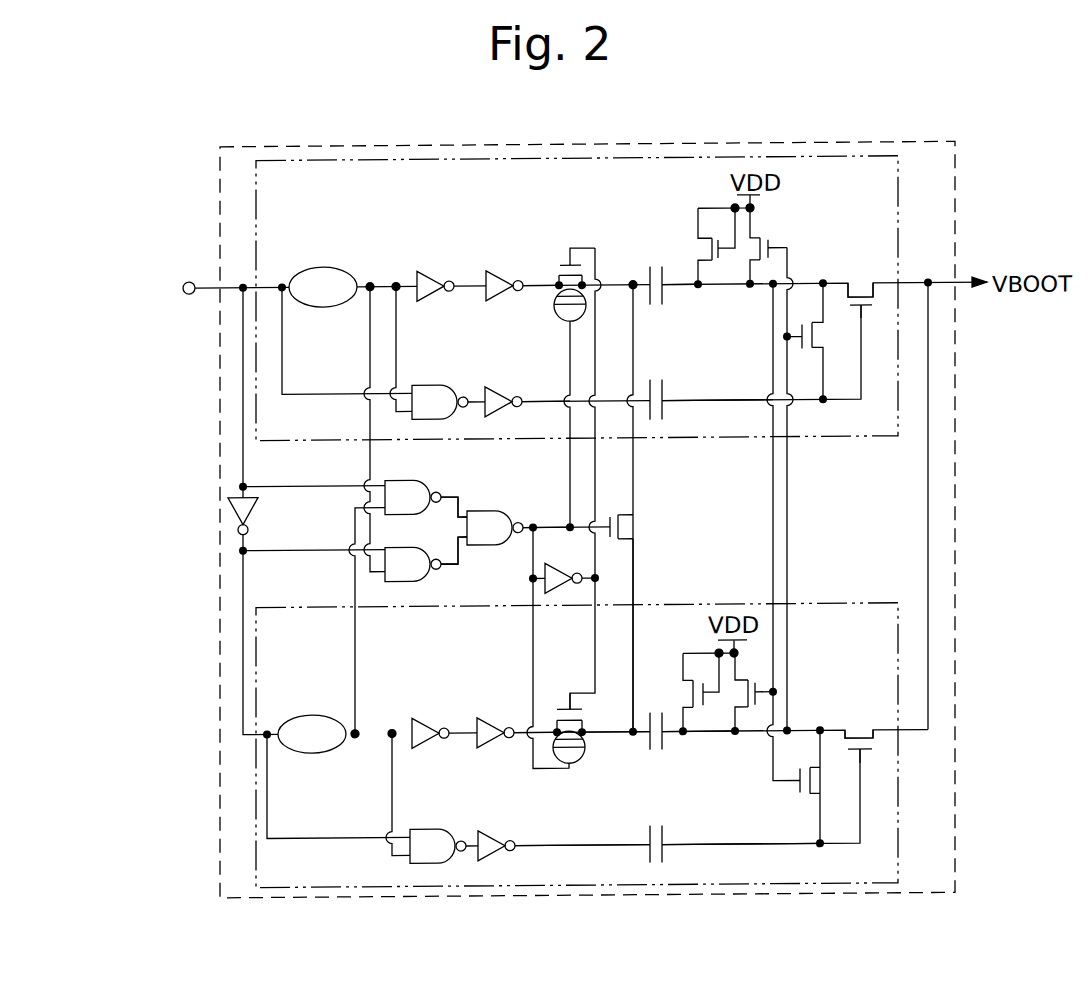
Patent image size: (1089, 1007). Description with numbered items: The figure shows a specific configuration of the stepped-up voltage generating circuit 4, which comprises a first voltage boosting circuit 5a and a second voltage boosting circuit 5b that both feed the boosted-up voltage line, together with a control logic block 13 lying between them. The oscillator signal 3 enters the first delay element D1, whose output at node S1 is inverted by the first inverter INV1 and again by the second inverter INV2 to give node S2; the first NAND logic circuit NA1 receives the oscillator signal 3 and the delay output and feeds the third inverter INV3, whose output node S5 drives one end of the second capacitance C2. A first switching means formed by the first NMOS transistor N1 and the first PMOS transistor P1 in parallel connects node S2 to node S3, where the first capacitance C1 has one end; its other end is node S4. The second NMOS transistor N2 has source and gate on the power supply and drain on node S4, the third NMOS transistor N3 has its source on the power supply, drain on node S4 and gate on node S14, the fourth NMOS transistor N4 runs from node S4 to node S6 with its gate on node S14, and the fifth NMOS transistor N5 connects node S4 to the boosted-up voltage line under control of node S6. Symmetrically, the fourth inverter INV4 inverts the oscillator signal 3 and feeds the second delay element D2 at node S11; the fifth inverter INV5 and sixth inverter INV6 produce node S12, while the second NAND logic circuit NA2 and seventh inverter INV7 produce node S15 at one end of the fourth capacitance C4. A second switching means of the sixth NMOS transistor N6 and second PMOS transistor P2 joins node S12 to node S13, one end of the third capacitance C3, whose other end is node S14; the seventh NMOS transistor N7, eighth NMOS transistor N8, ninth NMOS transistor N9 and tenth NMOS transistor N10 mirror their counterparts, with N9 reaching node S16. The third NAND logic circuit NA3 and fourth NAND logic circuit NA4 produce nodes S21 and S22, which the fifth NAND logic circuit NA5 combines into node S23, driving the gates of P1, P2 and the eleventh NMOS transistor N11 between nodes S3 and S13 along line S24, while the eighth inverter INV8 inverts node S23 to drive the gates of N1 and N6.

The oscillator signal 3 is at (188, 279).
The stepped-up voltage generating circuit 4 is at (955, 181).
The first voltage boosting circuit 5a is at (898, 252).
The second voltage boosting circuit 5b is at (898, 866).
The control circuit 13 is at (237, 575).
The first delay element D1 is at (323, 265).
The second delay element D2 is at (318, 751).
The first inverter INV1 is at (433, 271).
The second inverter INV2 is at (505, 271).
The third inverter INV3 is at (497, 386).
The fourth inverter INV4 is at (257, 508).
The fifth inverter INV5 is at (420, 718).
The sixth inverter INV6 is at (487, 718).
The seventh inverter INV7 is at (490, 830).
The eighth inverter INV8 is at (553, 593).
The first NAND logic circuit NA1 is at (430, 384).
The second NAND logic circuit NA2 is at (425, 828).
The third NAND logic circuit NA3 is at (412, 479).
The fourth NAND logic circuit NA4 is at (413, 580).
The fifth NAND logic circuit NA5 is at (502, 511).
The first NMOS transistor N1 is at (567, 259).
The second NMOS transistor N2 is at (698, 246).
The third NMOS transistor N3 is at (771, 246).
The fourth NMOS transistor N4 is at (822, 341).
The fifth NMOS transistor N5 is at (861, 287).
The sixth NMOS transistor N6 is at (558, 704).
The seventh NMOS transistor N7 is at (682, 692).
The eighth NMOS transistor N8 is at (754, 692).
The ninth NMOS transistor N9 is at (827, 778).
The tenth NMOS transistor N10 is at (866, 732).
The eleventh NMOS transistor N11 is at (645, 528).
The first PMOS transistor P1 is at (554, 307).
The second PMOS transistor P2 is at (577, 764).
The first capacitance C1 is at (657, 299).
The second capacitance C2 is at (655, 386).
The third capacitance C3 is at (655, 745).
The fourth capacitance C4 is at (650, 832).
The node S1 is at (381, 273).
The node S2 is at (541, 271).
The node S3 is at (625, 272).
The node S4 is at (688, 300).
The node S5 is at (546, 388).
The node S6 is at (717, 387).
The node S11 is at (370, 746).
The node S12 is at (520, 752).
The node S13 is at (616, 746).
The node S14 is at (698, 746).
The node S15 is at (582, 832).
The node S16 is at (741, 828).
The node S21 is at (474, 500).
The node S22 is at (474, 556).
The node S23 is at (555, 542).
The signal node S24 is at (660, 634).